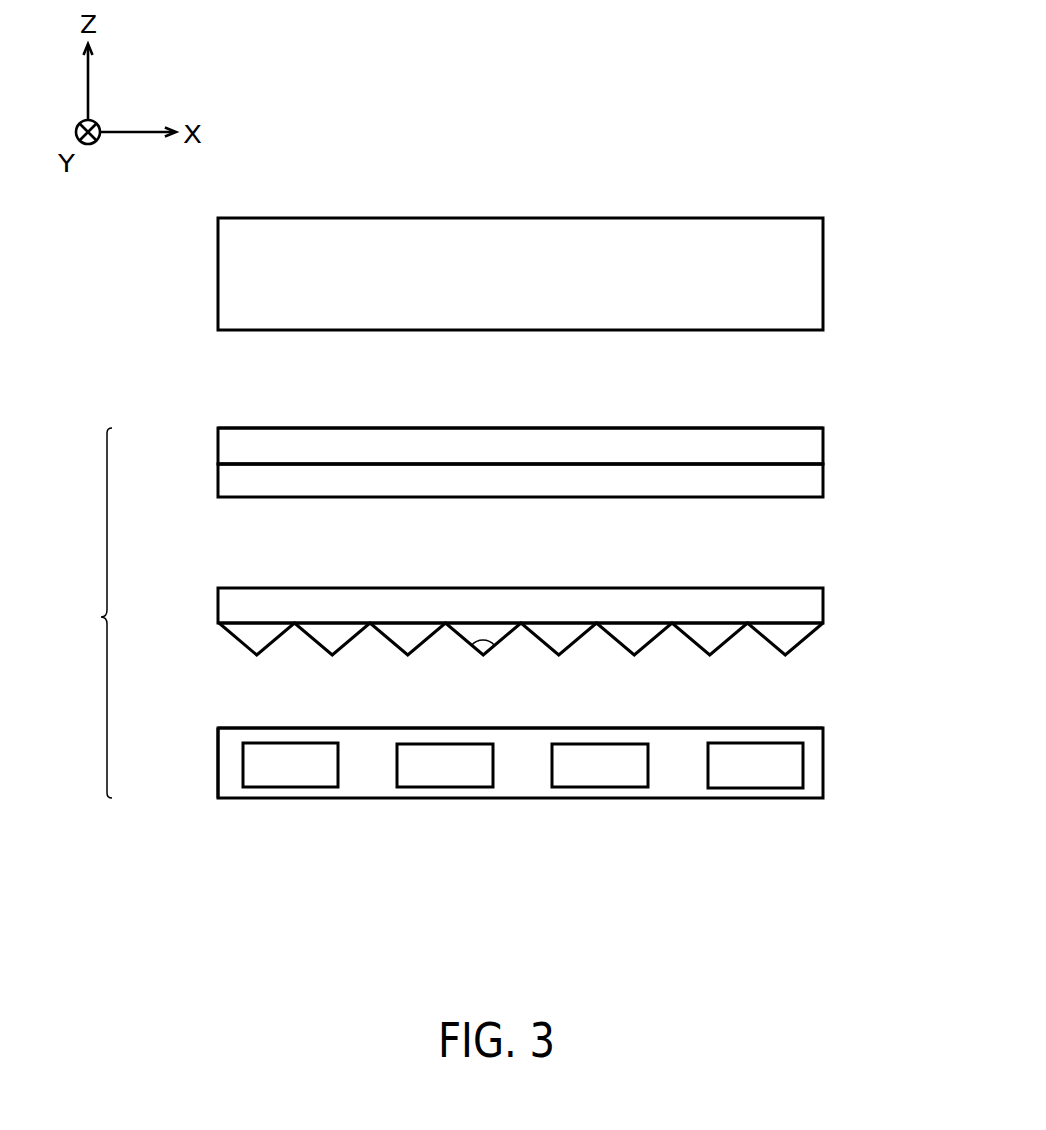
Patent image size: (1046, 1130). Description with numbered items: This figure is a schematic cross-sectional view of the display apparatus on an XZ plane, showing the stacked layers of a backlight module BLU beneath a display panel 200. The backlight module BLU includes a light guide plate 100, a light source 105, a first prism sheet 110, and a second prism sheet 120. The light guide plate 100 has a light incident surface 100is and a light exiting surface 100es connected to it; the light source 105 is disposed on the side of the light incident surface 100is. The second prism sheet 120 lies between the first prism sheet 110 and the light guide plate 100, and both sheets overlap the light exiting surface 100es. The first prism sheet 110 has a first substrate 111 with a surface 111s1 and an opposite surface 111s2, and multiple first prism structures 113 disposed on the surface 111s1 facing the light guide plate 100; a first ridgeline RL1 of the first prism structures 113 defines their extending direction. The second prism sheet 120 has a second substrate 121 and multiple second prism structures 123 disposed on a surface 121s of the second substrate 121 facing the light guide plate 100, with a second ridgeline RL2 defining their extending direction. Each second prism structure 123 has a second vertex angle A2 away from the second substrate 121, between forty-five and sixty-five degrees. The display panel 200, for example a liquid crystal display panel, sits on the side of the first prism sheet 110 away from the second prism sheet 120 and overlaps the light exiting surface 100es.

The display panel 200 is at (798, 278).
The backlight module BLU is at (79, 613).
The first prism sheet 110 is at (543, 473).
The first substrate 111 is at (800, 445).
The first prism structures 113 is at (800, 485).
The surface 111s2 is at (255, 427).
The surface (first surface) 111s1 is at (257, 465).
The first ridgeline RL1 is at (320, 498).
The second prism sheet 120 is at (550, 626).
The second substrate 121 is at (800, 603).
The second prism structures 123 is at (792, 635).
The surface (second surface) 121s is at (258, 625).
The second ridgeline RL2 is at (256, 656).
The second vertex angle A2 is at (485, 640).
The light guide plate 100 is at (813, 767).
The light source 105 is at (475, 768).
The light exiting surface 100es is at (783, 728).
The light incident surface 100is is at (232, 752).